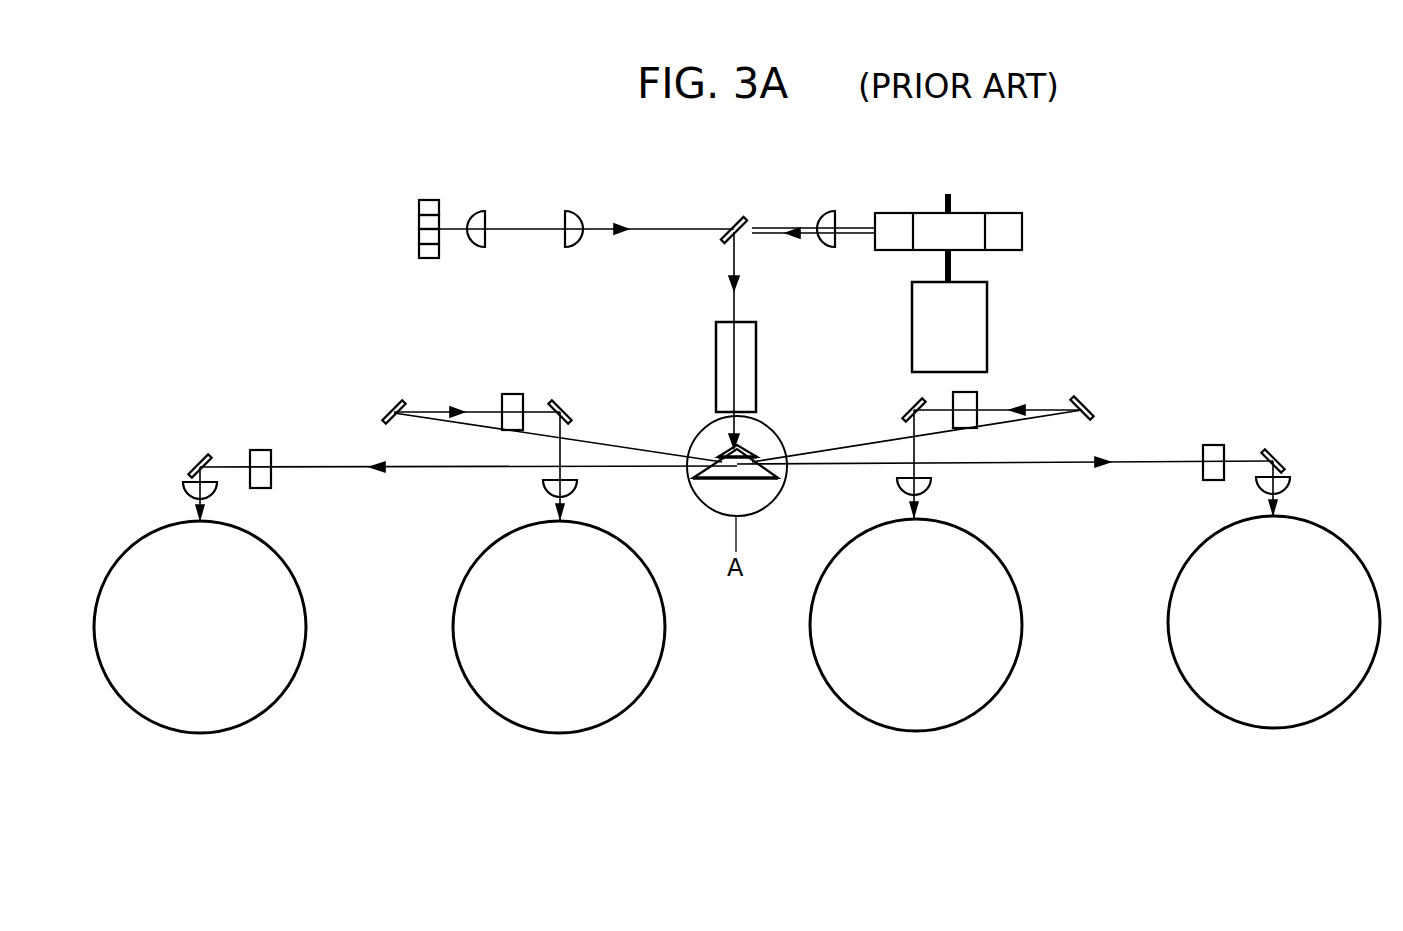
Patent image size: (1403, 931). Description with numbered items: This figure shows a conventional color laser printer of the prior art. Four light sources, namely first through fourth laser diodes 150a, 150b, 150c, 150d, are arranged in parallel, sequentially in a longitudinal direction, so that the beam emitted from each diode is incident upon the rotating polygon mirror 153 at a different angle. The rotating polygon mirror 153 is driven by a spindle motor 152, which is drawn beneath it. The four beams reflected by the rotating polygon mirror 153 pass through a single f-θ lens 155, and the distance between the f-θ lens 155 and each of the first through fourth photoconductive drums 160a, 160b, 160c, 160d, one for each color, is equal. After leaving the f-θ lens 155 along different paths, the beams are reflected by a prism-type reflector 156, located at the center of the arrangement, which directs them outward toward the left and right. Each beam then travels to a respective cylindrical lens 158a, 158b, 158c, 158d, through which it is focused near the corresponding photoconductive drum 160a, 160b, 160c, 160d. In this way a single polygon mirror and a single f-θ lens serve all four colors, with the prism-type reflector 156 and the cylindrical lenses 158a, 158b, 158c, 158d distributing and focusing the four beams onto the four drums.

The first laser diode 150a is at (419, 207).
The second laser diode 150b is at (419, 221).
The third laser diode 150c is at (419, 236).
The fourth laser diode 150d is at (419, 250).
The spindle motor 152 is at (989, 327).
The rotating polygon mirror 153 is at (1010, 213).
The f-θ lens 155 is at (757, 363).
The prism-type reflector 156 is at (755, 456).
The first cylindrical lens 158a is at (1290, 484).
The second cylindrical lens 158b is at (897, 486).
The third cylindrical lens 158c is at (543, 487).
The fourth cylindrical lens 158d is at (184, 488).
The first photoconductive drum 160a is at (1274, 730).
The second photoconductive drum 160b is at (916, 733).
The third photoconductive drum 160c is at (559, 735).
The fourth photoconductive drum 160d is at (201, 735).